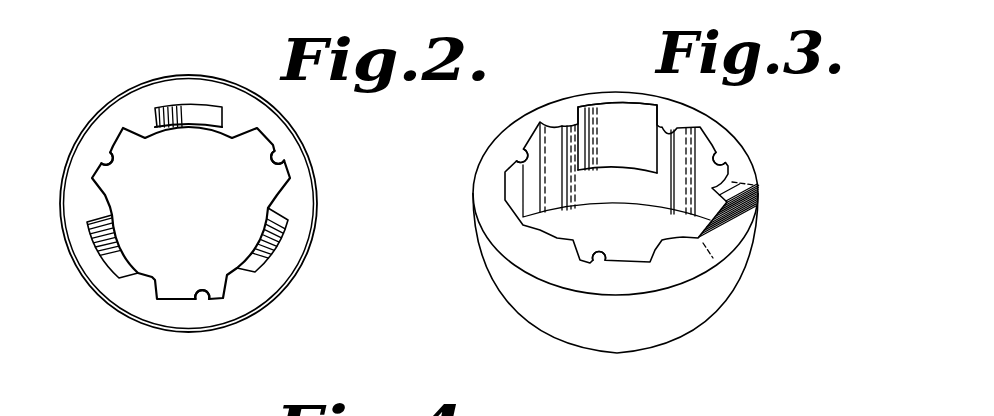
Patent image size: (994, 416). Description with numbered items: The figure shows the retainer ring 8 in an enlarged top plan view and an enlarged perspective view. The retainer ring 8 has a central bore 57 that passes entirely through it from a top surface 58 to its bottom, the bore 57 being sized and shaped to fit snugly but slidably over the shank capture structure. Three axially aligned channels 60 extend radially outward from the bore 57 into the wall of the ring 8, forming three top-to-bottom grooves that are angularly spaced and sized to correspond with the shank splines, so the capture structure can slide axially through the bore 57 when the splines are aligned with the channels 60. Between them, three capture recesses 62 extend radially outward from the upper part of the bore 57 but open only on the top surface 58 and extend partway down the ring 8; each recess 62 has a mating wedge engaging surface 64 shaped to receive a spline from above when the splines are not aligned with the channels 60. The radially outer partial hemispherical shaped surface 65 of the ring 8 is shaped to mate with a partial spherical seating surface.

In FIG. 2, the retainer ring 8 is at (316, 225).
In FIG. 3, the retainer ring 8 is at (759, 222).
In FIG. 2, the central bore 57 is at (110, 205).
In FIG. 3, the central bore 57 is at (687, 132).
In FIG. 2, the top surface 58 is at (143, 298).
In FIG. 3, the top surface 58 is at (492, 176).
In FIG. 2, the channels 60 is at (104, 150).
In FIG. 3, the channels 60 is at (522, 152).
In FIG. 2, the recesses 62 is at (204, 113).
In FIG. 3, the recesses 62 is at (601, 110).
In FIG. 2, the wedge engaging surface 64 is at (215, 128).
In FIG. 3, the wedge engaging surface 64 is at (620, 147).
In FIG. 3, the partial hemispherical shaped surface 65 is at (657, 334).